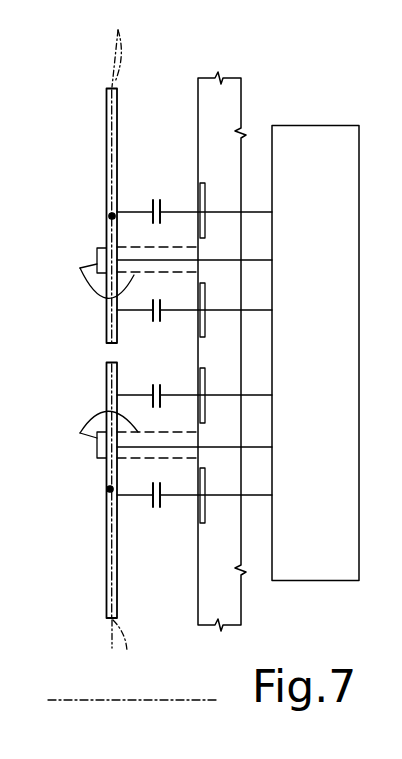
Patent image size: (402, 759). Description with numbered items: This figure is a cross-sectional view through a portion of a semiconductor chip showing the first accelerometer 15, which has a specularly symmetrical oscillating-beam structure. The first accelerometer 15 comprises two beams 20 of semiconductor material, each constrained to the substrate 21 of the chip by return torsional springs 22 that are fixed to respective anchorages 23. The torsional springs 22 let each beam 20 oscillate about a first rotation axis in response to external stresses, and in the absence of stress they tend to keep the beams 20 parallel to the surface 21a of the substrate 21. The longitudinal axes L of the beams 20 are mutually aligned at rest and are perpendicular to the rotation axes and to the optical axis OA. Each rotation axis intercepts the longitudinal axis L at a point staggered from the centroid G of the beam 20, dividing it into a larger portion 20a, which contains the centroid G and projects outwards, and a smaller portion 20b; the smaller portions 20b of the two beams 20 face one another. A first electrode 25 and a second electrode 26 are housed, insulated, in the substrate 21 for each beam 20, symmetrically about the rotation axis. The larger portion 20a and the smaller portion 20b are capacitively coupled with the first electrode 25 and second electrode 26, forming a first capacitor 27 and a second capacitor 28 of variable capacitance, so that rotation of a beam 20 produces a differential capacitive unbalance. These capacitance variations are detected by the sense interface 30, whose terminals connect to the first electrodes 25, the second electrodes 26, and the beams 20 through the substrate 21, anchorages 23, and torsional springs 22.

The first accelerometer 15 is at (268, 82).
The beam 20 is at (94, 188).
The larger portion 20a is at (105, 116).
The smaller portion 20b is at (105, 385).
The substrate 21 is at (240, 607).
The surface of the substrate 21a is at (193, 590).
The return torsional spring 22 is at (80, 270).
The anchorage 23 is at (95, 252).
The first electrode 25 is at (206, 203).
The second electrode 26 is at (206, 301).
The first capacitor 27 is at (150, 548).
The second capacitor 28 is at (152, 394).
The sense interface 30 is at (327, 580).
The centroid G is at (108, 215).
The longitudinal axis L is at (123, 340).
The optical axis OA is at (97, 693).